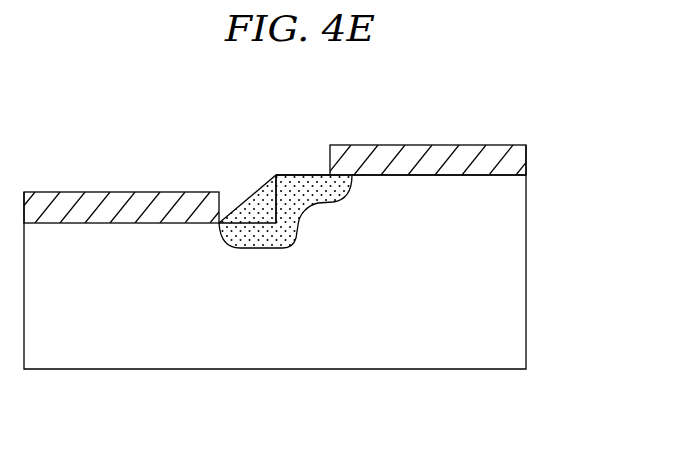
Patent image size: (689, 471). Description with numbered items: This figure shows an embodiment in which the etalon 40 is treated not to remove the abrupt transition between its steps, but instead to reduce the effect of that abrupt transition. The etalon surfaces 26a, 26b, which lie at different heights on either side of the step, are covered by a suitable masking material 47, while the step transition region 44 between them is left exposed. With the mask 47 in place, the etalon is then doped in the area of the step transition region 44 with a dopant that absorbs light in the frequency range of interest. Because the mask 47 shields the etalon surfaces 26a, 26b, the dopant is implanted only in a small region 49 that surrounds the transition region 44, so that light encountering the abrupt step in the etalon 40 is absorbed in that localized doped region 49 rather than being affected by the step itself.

The etalon 40 is at (498, 280).
The step transition region 44 is at (275, 170).
The mask 47 is at (497, 162).
The doped region 49 is at (263, 240).
The etalon surface 26a is at (433, 182).
The etalon surface 26b is at (120, 230).